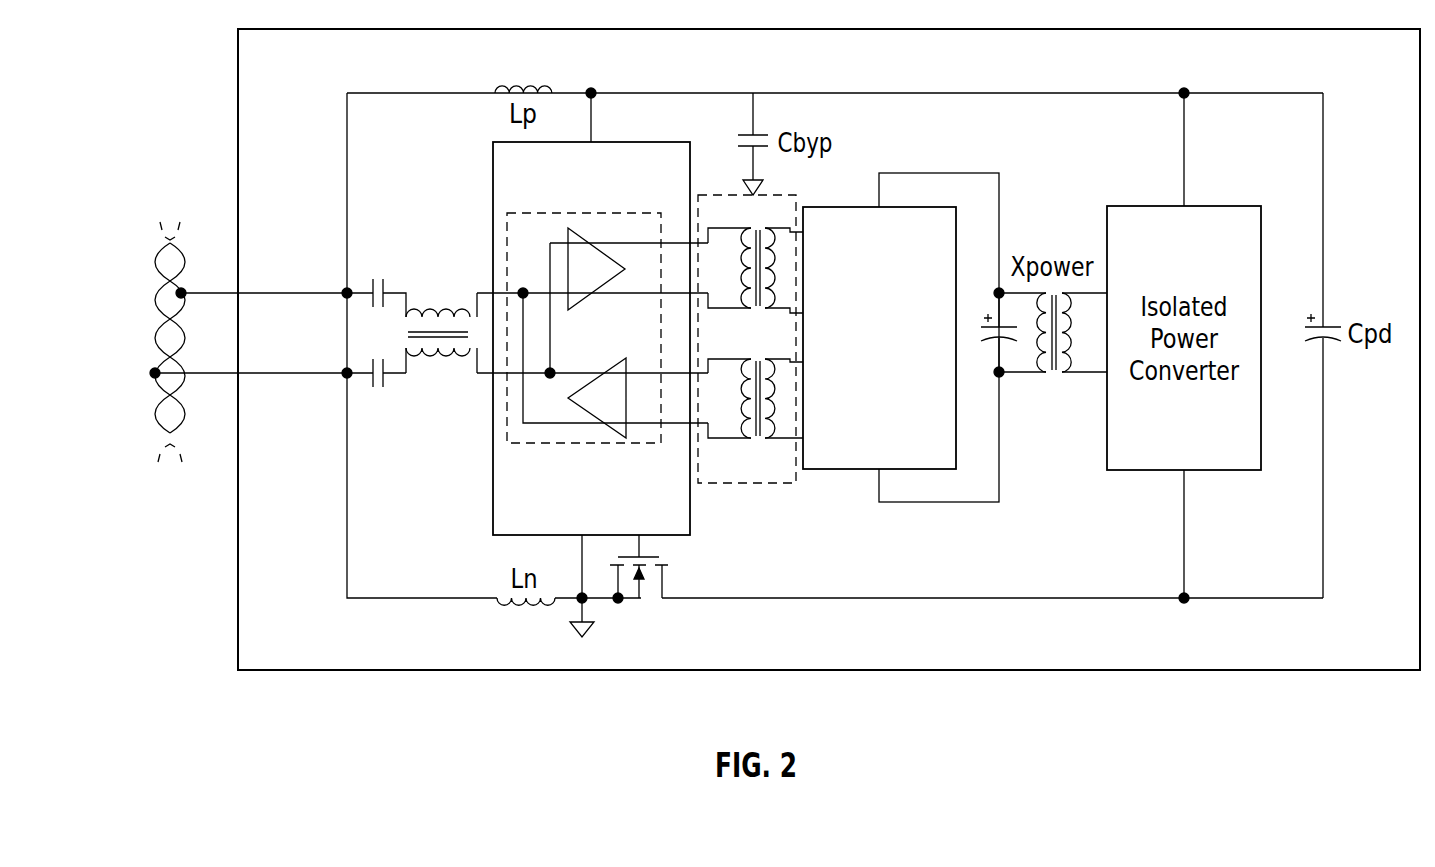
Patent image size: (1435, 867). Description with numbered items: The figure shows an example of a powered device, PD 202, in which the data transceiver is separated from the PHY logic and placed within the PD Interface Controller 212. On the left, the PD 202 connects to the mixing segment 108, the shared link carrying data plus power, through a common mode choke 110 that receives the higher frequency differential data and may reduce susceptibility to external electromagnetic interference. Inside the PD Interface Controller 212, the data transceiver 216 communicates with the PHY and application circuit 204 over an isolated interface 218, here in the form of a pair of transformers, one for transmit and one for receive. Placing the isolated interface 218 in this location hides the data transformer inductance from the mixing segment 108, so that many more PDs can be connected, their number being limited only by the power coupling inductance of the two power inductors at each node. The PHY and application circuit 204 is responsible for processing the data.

The PD 202 is at (345, 28).
The mixing segment 108 is at (140, 278).
The common mode choke (CMC) 110 is at (440, 293).
The PD Interface Controller 212 is at (493, 165).
The data transceiver 216 is at (537, 213).
The isolated interface 218 is at (733, 484).
The PHY and application circuit 204 is at (870, 206).